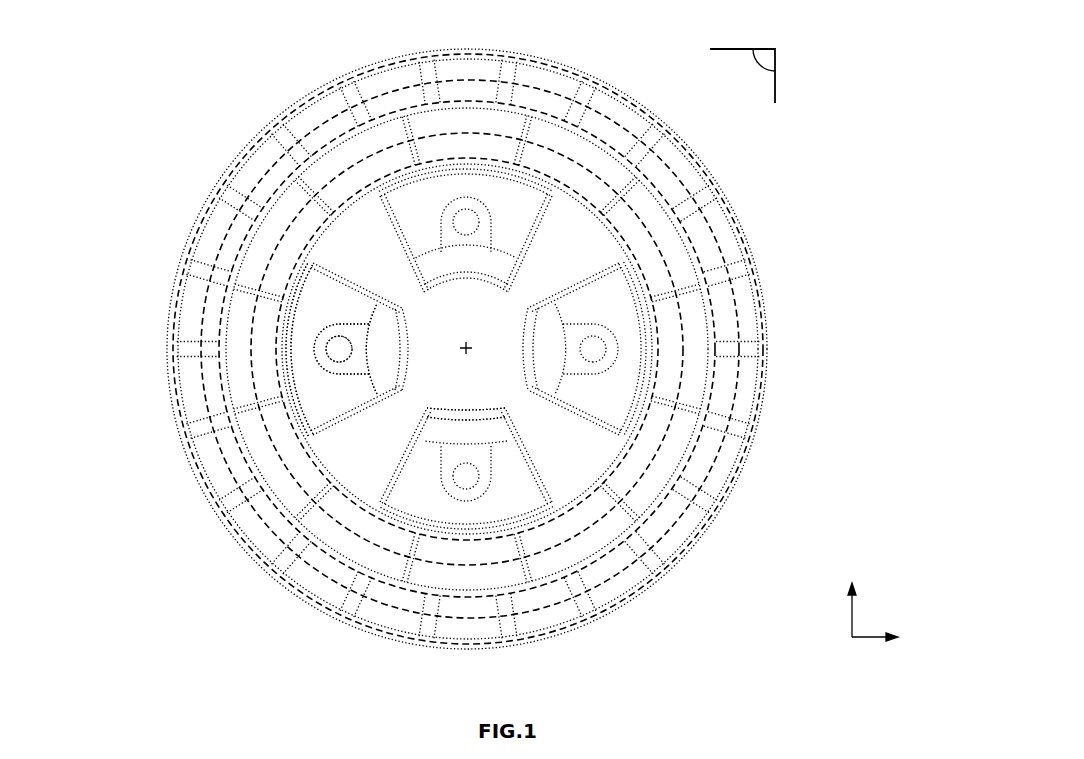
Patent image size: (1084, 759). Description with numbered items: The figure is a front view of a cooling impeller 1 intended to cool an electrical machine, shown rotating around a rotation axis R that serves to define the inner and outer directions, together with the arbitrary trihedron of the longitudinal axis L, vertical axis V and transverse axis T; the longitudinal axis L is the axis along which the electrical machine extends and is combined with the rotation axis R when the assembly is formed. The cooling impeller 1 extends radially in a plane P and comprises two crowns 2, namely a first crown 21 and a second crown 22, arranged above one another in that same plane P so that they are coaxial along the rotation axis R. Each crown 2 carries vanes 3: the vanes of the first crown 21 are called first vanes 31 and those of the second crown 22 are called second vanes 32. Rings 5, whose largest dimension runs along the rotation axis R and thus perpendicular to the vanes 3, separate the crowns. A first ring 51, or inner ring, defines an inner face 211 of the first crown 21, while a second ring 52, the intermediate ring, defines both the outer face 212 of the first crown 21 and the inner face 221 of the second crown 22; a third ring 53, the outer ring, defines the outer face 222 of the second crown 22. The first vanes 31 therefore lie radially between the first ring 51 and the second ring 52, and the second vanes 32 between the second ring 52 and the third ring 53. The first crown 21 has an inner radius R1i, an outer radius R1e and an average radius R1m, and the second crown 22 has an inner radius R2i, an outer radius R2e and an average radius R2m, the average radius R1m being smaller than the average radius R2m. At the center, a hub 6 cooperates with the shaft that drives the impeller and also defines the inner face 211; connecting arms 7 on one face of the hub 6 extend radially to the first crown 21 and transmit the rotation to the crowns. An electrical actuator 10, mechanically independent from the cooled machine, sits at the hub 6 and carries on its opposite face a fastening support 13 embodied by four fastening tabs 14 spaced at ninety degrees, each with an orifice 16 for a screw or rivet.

The cooling impeller 1 is at (213, 80).
The crowns 2 is at (680, 530).
The vanes 3 is at (765, 342).
The rings 5 is at (630, 163).
The hub 6 is at (480, 394).
The connecting arms 7 is at (353, 250).
The electrical actuator 10 is at (383, 327).
The fastening support 13 is at (363, 367).
The fastening tabs 14 is at (320, 338).
The orifice 16 is at (338, 350).
The first crown 21 is at (662, 236).
The second crown 22 is at (738, 303).
The first vanes 31 is at (253, 272).
The second vanes 32 is at (224, 460).
The first ring 51 is at (417, 530).
The second ring 52 is at (348, 128).
The third ring 53 is at (233, 234).
The inner face of the first crown 211 is at (643, 420).
The outer face of the first crown 212 is at (581, 540).
The inner face of the second crown 221 is at (323, 540).
The outer face of the second crown 222 is at (220, 503).
The outer radius of the second crown R2e is at (380, 67).
The average radius of the second crown R2m is at (440, 80).
The inner radius of the second crown R2i is at (479, 100).
The outer radius of the first crown R1e is at (520, 112).
The average radius of the first crown R1m is at (540, 140).
The inner radius of the first crown R1i is at (560, 187).
The rotation axis R is at (462, 348).
The plane P is at (772, 60).
The vertical axis V is at (850, 606).
The transverse axis T is at (866, 633).
The longitudinal axis L is at (852, 640).